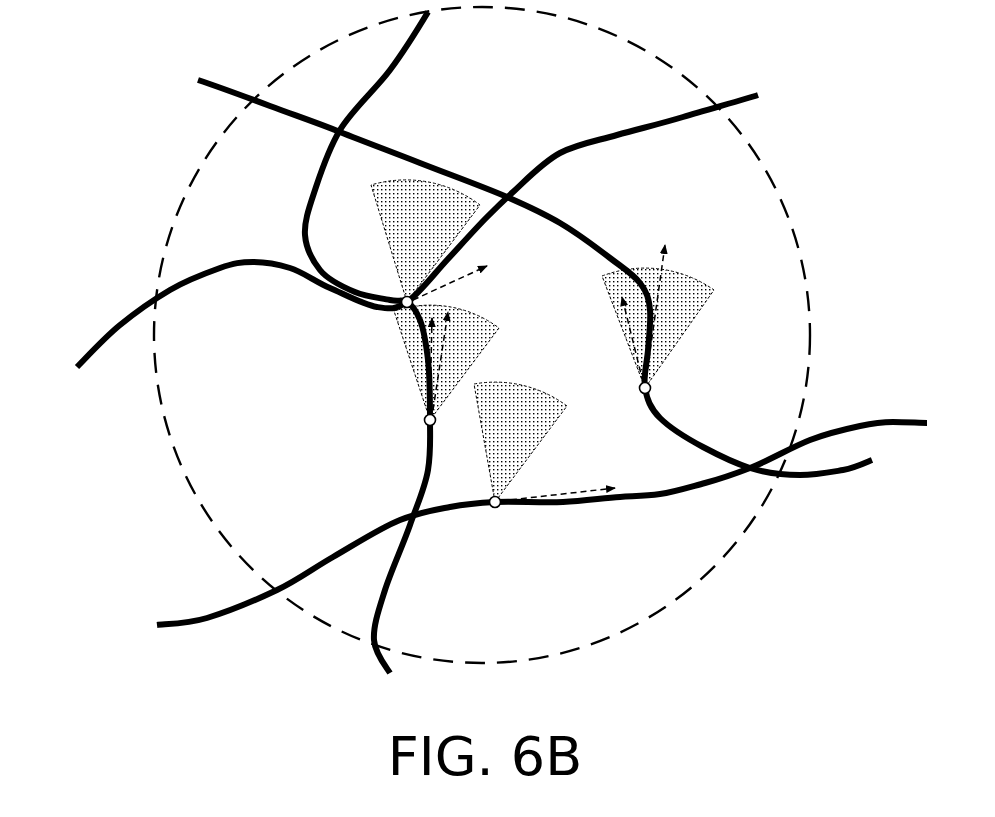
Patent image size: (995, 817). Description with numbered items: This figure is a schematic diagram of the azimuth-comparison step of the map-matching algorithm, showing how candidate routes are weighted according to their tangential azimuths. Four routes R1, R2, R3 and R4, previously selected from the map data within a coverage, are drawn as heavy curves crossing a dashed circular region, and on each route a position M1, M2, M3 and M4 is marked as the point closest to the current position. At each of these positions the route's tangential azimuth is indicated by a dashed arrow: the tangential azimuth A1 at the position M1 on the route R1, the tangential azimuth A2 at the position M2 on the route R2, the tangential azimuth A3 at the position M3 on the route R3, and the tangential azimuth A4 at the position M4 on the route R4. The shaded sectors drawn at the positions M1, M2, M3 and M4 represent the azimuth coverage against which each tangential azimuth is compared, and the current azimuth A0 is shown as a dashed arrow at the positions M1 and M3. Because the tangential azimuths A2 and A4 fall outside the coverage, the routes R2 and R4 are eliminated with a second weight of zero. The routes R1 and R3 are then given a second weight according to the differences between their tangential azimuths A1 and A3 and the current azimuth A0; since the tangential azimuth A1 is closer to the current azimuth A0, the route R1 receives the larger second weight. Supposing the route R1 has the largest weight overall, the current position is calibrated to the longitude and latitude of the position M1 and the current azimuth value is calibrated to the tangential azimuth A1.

The route R1 is at (367, 366).
The route R2 is at (515, 523).
The route R3 is at (562, 277).
The route R4 is at (394, 250).
The position M1 is at (426, 423).
The position M2 is at (497, 508).
The position M3 is at (651, 389).
The position M4 is at (402, 298).
The current azimuth A0 is at (450, 327).
The tangential azimuth A1 is at (432, 333).
The tangential azimuth A2 is at (579, 483).
The tangential azimuth A3 is at (628, 325).
The tangential azimuth A4 is at (472, 266).